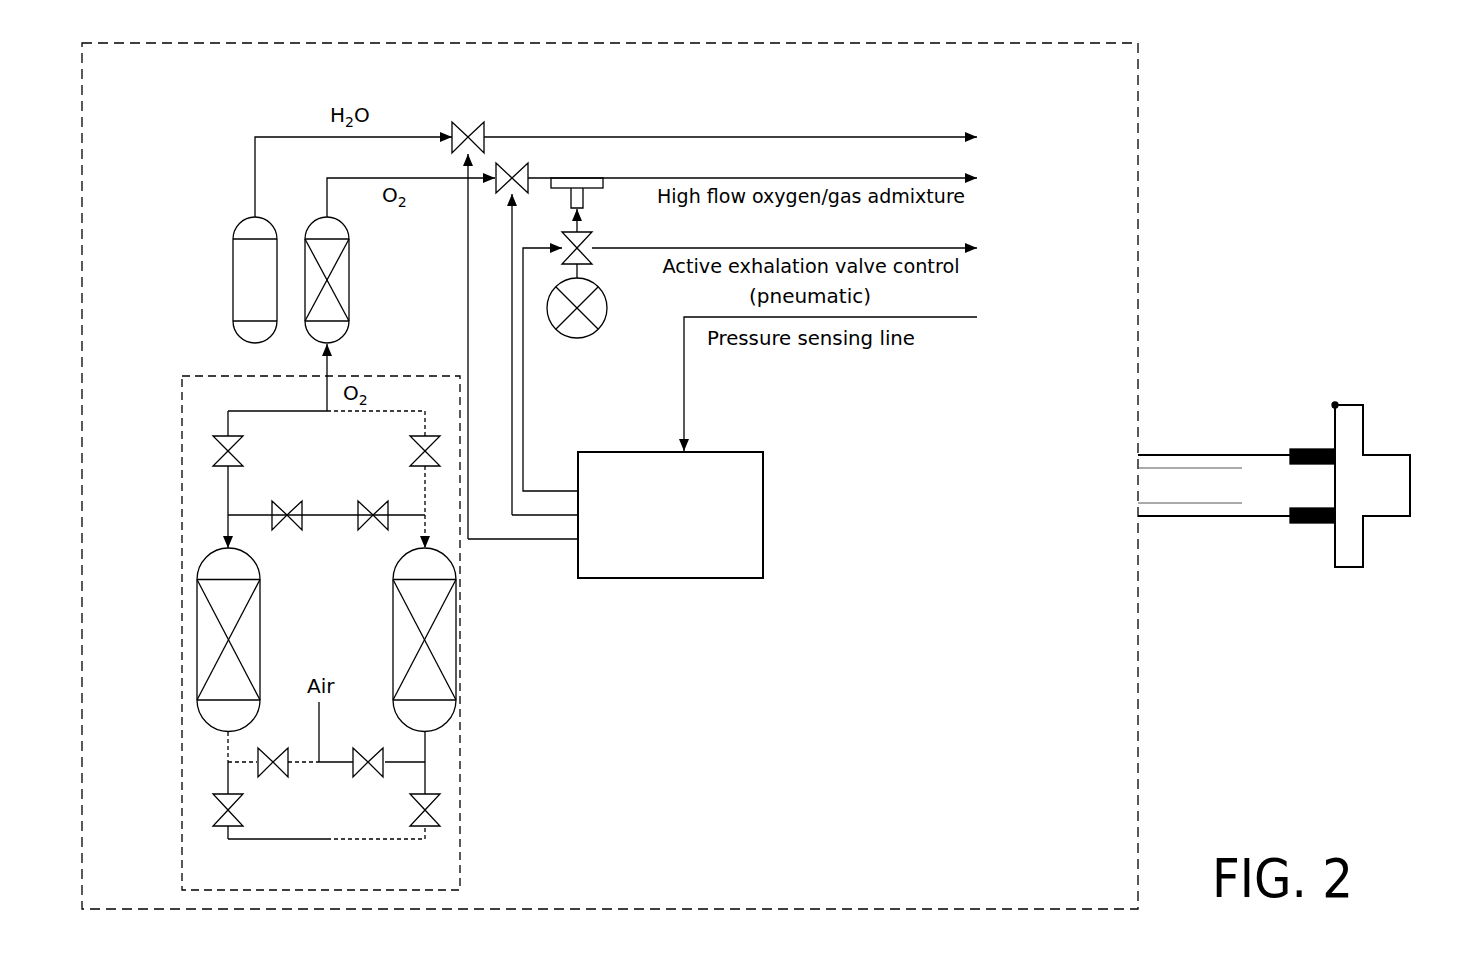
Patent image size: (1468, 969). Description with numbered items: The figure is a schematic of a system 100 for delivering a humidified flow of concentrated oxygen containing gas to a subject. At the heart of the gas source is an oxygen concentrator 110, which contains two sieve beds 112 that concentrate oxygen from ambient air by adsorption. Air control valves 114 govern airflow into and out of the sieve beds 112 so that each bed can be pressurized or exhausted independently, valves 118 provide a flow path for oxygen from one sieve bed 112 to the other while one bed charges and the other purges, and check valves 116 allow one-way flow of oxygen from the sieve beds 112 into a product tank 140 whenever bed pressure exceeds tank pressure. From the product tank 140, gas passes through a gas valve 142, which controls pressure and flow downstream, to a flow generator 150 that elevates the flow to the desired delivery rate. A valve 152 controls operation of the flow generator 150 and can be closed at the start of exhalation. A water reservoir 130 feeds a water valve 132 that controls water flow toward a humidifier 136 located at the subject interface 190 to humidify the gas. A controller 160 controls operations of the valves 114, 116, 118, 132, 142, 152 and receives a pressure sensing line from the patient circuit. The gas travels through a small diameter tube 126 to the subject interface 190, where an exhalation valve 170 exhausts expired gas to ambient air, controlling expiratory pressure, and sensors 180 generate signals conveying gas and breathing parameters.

The system 100 is at (1376, 159).
The oxygen concentrator 110 is at (182, 688).
The sieve beds 112 is at (247, 632).
The valves 114 is at (483, 815).
The check valves 116 is at (234, 452).
The valves 118 is at (290, 528).
The tube 126 is at (1255, 518).
The water reservoir 130 is at (233, 254).
The water valve 132 is at (470, 121).
The humidifier 136 is at (1113, 122).
The product tank 140 is at (352, 258).
The gas valve 142 is at (512, 162).
The flow generator 150 is at (558, 333).
The valve 152 is at (590, 233).
The controller 160 is at (765, 517).
The exhalation valve 170 is at (1335, 403).
The sensors 180 is at (1315, 525).
The subject interface 190 is at (1097, 200).